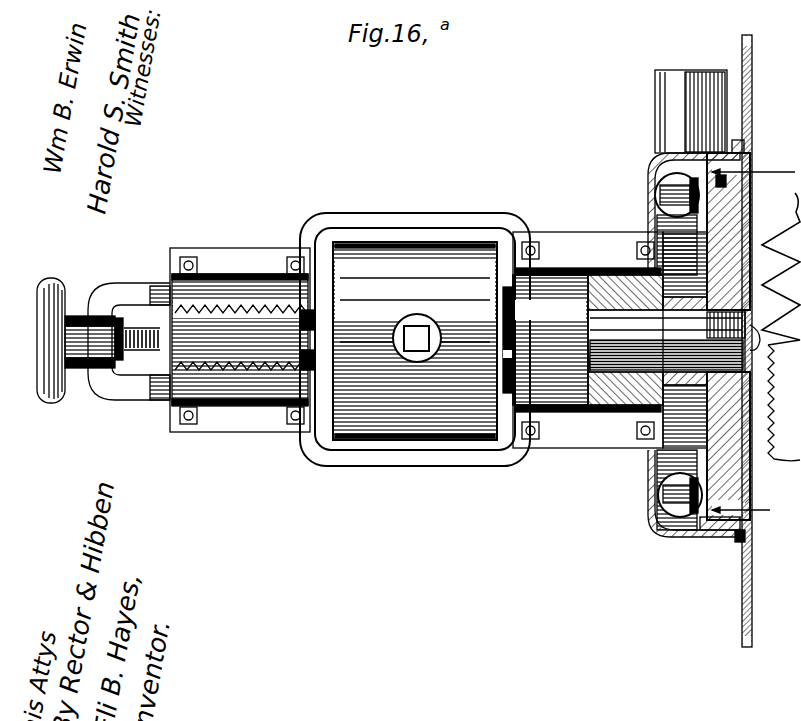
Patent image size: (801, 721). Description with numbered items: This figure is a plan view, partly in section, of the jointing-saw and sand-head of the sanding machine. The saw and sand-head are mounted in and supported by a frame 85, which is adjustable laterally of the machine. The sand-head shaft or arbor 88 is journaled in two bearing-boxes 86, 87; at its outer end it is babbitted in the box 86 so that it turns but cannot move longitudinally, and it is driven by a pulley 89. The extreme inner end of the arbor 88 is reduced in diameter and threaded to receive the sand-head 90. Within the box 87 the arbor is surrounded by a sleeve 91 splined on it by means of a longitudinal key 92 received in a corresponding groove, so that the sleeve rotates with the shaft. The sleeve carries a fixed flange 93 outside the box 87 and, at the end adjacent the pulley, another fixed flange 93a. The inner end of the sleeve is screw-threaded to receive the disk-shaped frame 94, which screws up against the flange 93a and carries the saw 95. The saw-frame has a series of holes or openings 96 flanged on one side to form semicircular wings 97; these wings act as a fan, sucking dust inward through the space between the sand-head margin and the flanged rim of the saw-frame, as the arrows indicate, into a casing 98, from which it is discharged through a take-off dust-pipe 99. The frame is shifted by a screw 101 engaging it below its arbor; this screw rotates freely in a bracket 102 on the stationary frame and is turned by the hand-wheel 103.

The frame 85 is at (330, 455).
The bearing-box 86 is at (225, 432).
The bearing-box 87 is at (598, 447).
The sand-head shaft or arbor 88 is at (598, 325).
The pulley 89 is at (415, 341).
The sand-head 90 is at (751, 336).
The sleeve 91 is at (585, 385).
The longitudinal key 92 is at (620, 345).
The fixed flange 93 is at (505, 300).
The fixed flange 93a is at (630, 428).
The disk-shaped frame 94 is at (690, 455).
The saw 95 is at (752, 68).
The holes or openings 96 is at (685, 535).
The semicircular wings 97 is at (655, 200).
The casing 98 is at (660, 537).
The take-off dust-pipe 99 is at (690, 70).
The screw 101 is at (150, 305).
The bracket 102 is at (120, 400).
The hand-wheel 103 is at (52, 403).